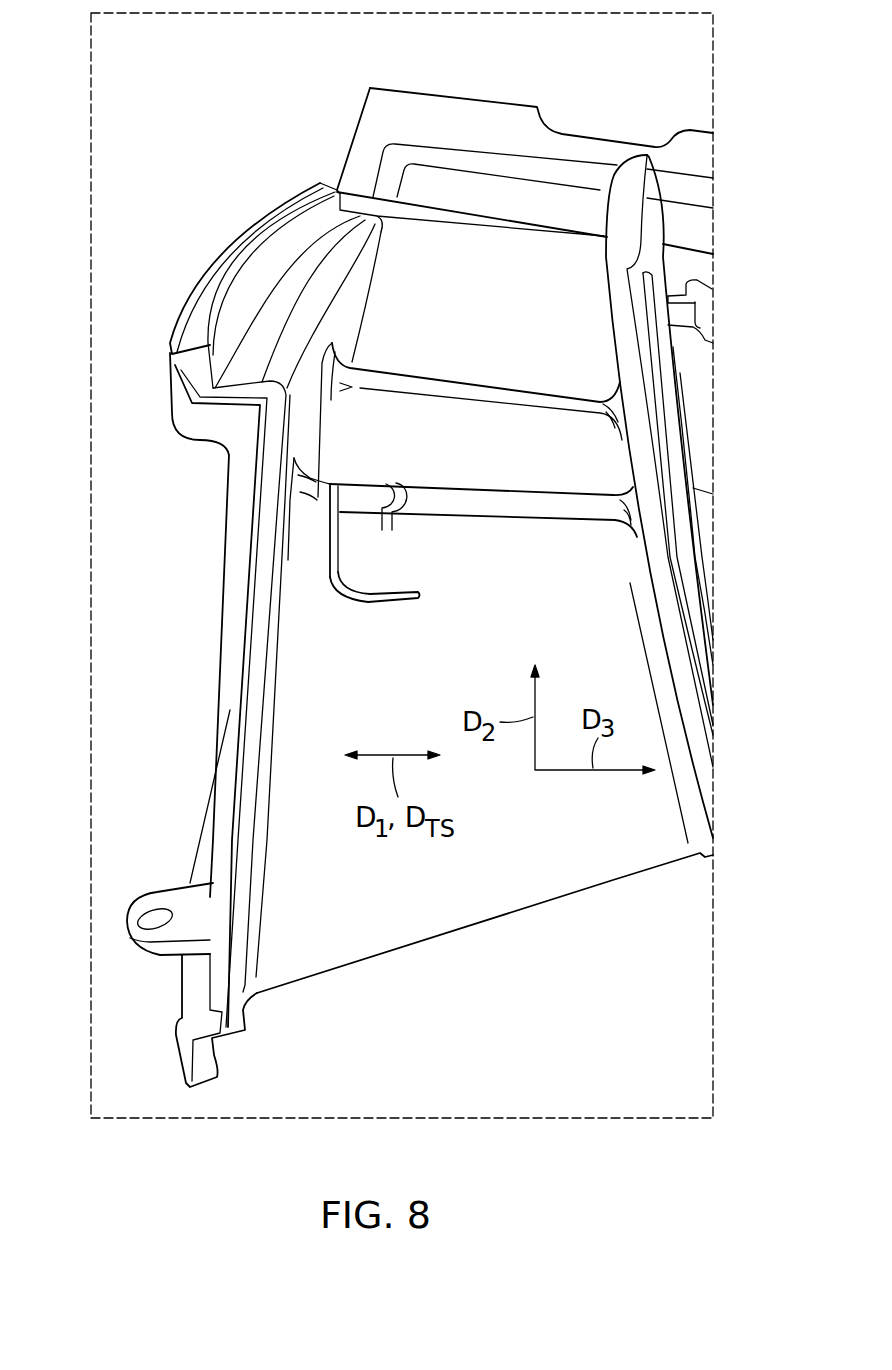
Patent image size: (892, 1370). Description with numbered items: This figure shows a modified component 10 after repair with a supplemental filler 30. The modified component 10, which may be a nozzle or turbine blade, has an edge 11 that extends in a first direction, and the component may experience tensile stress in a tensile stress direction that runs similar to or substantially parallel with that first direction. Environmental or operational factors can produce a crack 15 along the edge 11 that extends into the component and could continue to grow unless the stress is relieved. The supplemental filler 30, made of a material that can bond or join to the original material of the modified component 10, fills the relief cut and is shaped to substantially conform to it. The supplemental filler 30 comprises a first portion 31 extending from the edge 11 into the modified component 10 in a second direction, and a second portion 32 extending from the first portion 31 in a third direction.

The modified component 10 is at (655, 659).
The edge 11 is at (505, 483).
The crack 15 is at (397, 472).
The supplemental filler 30 is at (431, 579).
The first portion 31 is at (357, 552).
The second portion 32 is at (402, 618).